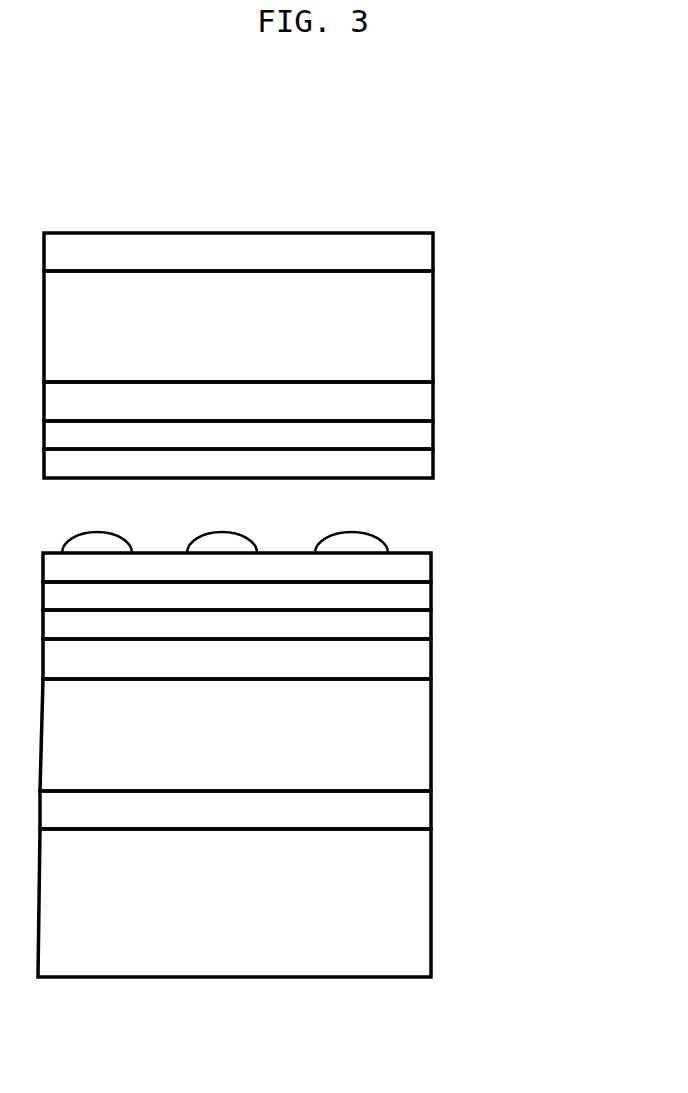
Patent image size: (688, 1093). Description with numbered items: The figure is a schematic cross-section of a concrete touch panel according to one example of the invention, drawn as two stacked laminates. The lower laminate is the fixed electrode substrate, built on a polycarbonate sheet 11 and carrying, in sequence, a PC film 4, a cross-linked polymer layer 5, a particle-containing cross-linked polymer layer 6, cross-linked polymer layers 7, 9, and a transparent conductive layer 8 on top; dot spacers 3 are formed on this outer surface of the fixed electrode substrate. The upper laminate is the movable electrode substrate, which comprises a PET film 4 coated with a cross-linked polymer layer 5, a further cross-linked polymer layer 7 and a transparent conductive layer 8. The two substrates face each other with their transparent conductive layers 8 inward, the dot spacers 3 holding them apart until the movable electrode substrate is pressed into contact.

The dot spacer 3 is at (387, 541).
The polyethylene terephthalate film or polycarbonate film 4 is at (403, 326).
The cross-linked polymer layer 5 is at (407, 250).
The cross-linked polymer layer containing fine particles 6 is at (412, 663).
The cross-linked polymer layer 7 is at (413, 437).
The transparent conductive layer 8 is at (413, 464).
The cross-linked polymer layer 9 is at (406, 623).
The polycarbonate sheet 11 is at (402, 922).